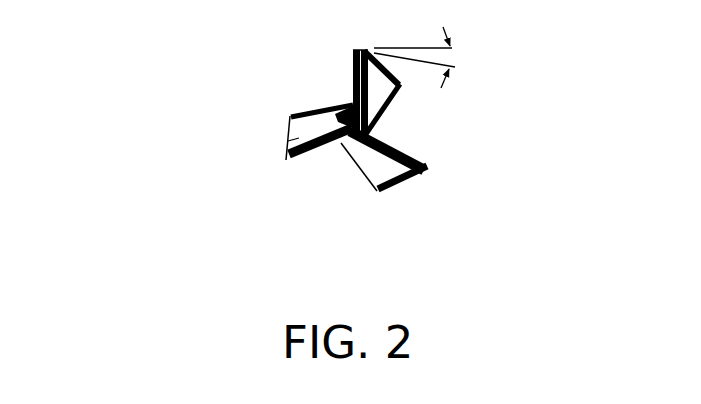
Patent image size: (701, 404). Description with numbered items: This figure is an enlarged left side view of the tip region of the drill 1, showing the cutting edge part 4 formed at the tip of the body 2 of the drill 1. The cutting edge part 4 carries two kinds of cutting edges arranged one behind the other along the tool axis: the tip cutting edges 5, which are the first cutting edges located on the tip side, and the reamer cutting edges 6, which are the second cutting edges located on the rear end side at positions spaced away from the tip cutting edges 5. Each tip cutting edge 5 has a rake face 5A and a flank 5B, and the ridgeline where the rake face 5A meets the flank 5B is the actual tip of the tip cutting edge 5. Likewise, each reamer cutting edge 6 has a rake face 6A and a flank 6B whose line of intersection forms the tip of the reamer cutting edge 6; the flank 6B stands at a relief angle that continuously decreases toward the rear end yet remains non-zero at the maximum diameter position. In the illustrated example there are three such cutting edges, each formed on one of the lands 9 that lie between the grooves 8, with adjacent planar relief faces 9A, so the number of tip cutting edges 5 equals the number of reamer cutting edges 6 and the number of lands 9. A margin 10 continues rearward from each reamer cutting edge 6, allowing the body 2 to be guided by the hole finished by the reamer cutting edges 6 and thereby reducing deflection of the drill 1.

The drill 1 is at (191, 130).
The body 2 is at (279, 119).
The cutting edge part 4 is at (350, 73).
The tip cutting edges 5 is at (307, 168).
The rake face 5A is at (352, 92).
The flank 5B is at (365, 100).
The reamer cutting edges 6 is at (286, 166).
The rake face 6A is at (354, 50).
The flank 6B is at (361, 50).
The grooves 8 is at (333, 172).
The lands 9 is at (393, 190).
The planar relief faces 9A is at (285, 153).
The margin 10 is at (429, 167).